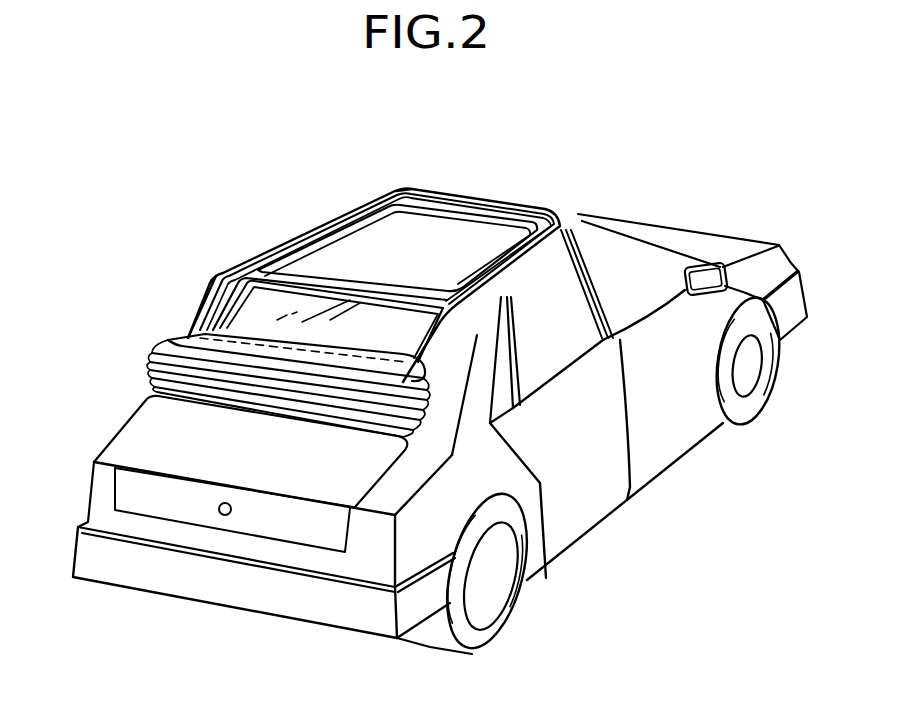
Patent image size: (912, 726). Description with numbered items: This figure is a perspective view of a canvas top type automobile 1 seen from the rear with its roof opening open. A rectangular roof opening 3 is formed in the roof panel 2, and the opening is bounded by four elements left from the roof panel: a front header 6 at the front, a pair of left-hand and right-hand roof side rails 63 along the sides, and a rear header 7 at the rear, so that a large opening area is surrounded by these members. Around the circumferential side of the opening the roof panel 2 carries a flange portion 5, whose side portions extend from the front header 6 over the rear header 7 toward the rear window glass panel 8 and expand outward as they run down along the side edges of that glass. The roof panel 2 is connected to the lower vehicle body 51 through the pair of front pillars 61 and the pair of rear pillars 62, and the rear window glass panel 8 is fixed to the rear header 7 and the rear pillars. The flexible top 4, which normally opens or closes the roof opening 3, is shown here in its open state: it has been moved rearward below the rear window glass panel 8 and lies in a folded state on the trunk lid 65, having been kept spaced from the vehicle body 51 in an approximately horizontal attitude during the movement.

The automobile 1 is at (492, 165).
The roof panel 2 is at (570, 220).
The roof opening 3 is at (303, 233).
The flexible top 4 is at (138, 358).
The flange portion 5 is at (537, 217).
The front header 6 is at (423, 189).
The rear header 7 is at (240, 260).
The rear window glass panel 8 is at (432, 327).
The vehicle body 51 is at (483, 465).
The front pillars 61 is at (645, 237).
The rear pillars 62 is at (200, 308).
The roof side rails 63 is at (340, 213).
The trunk lid 65 is at (173, 420).